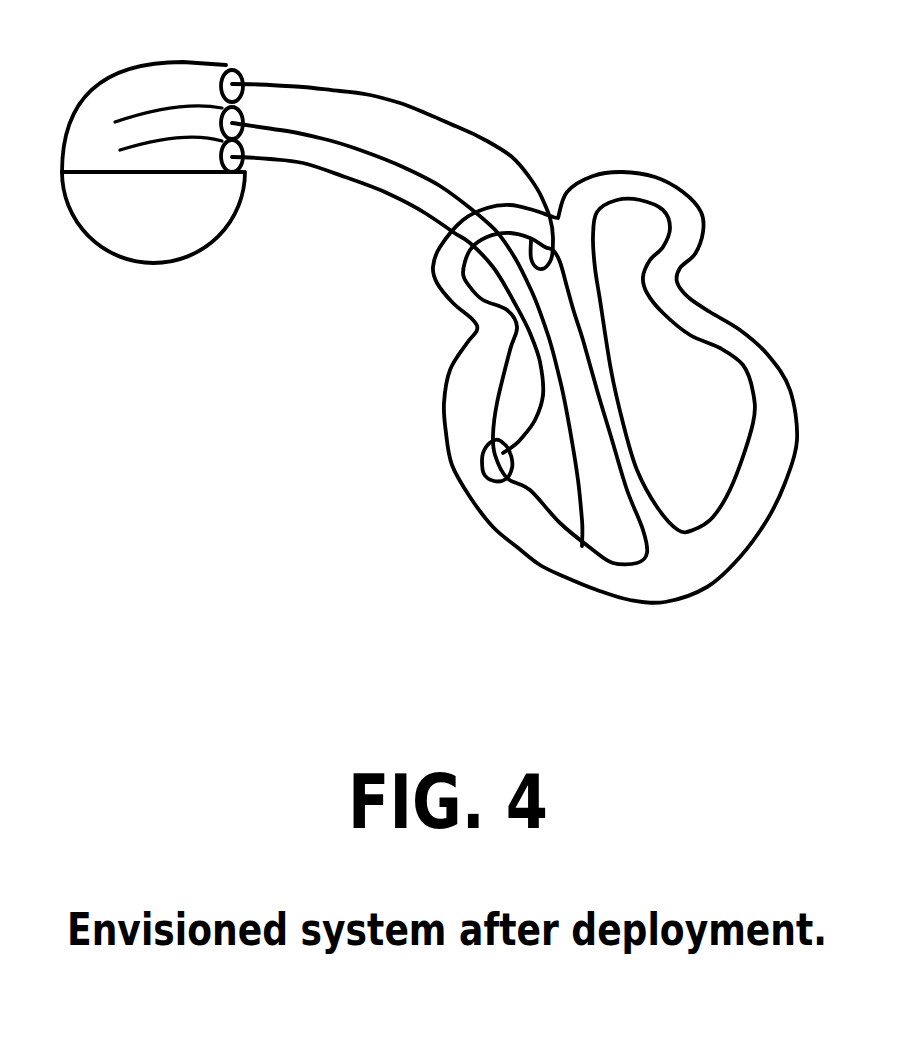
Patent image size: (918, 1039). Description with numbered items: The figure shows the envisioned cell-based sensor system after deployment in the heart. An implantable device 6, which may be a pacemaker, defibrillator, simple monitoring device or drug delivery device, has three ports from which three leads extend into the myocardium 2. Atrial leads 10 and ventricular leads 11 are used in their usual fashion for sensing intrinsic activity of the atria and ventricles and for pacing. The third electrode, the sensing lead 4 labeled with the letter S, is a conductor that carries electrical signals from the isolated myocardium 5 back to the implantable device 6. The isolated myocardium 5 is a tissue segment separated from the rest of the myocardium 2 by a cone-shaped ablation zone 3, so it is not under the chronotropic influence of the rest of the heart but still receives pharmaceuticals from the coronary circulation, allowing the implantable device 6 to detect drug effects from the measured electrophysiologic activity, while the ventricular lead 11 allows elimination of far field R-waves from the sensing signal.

The myocardium 2 is at (517, 520).
The cone-shaped ablation zone 3 is at (483, 473).
The sensing lead 4 is at (303, 167).
The isolated myocardium 5 is at (483, 447).
The implantable device 6 is at (160, 262).
The atrial lead 10 is at (370, 95).
The ventricular lead 11 is at (403, 163).